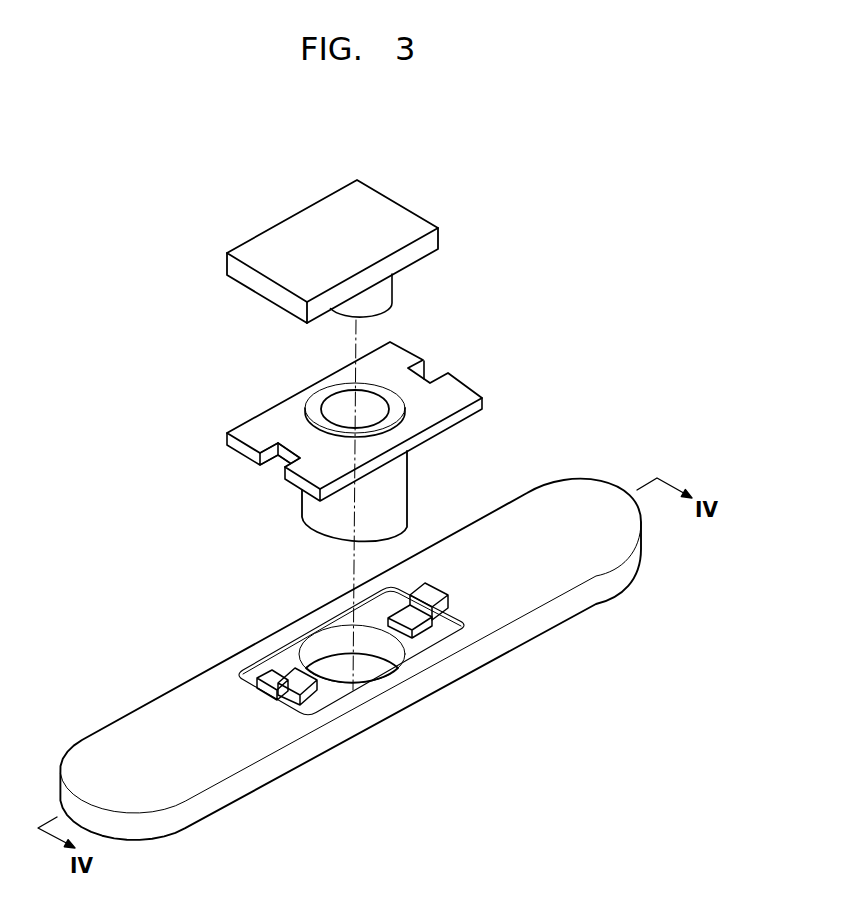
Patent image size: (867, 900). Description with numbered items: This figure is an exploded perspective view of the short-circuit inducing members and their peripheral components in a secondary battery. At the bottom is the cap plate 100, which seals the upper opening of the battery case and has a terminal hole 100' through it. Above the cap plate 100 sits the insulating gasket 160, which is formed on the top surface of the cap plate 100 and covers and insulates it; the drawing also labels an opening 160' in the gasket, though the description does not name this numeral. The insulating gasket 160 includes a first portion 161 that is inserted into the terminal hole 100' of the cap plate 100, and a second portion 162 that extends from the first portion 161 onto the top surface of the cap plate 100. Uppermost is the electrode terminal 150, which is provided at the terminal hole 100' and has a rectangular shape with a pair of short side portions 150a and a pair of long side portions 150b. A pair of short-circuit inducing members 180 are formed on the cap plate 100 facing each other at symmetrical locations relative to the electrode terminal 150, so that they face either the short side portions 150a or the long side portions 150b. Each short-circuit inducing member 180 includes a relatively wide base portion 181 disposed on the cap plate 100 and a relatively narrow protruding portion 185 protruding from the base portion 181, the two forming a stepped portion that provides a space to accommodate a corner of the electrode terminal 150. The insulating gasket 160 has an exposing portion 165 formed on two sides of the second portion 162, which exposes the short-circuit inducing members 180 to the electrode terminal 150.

The cap plate 100 is at (350, 659).
The terminal hole 100' is at (349, 638).
The electrode terminal 150 is at (307, 241).
The short side portions 150a is at (260, 284).
The long side portions 150b is at (296, 213).
The insulating gasket 160 is at (392, 439).
The opening of holder 160' is at (325, 387).
The first portion 161 is at (400, 480).
The second portion 162 is at (460, 392).
The exposing portion 165 is at (280, 470).
The short-circuit inducing member 180 is at (419, 723).
The base portion 181 is at (305, 688).
The protruding portion 185 is at (274, 700).